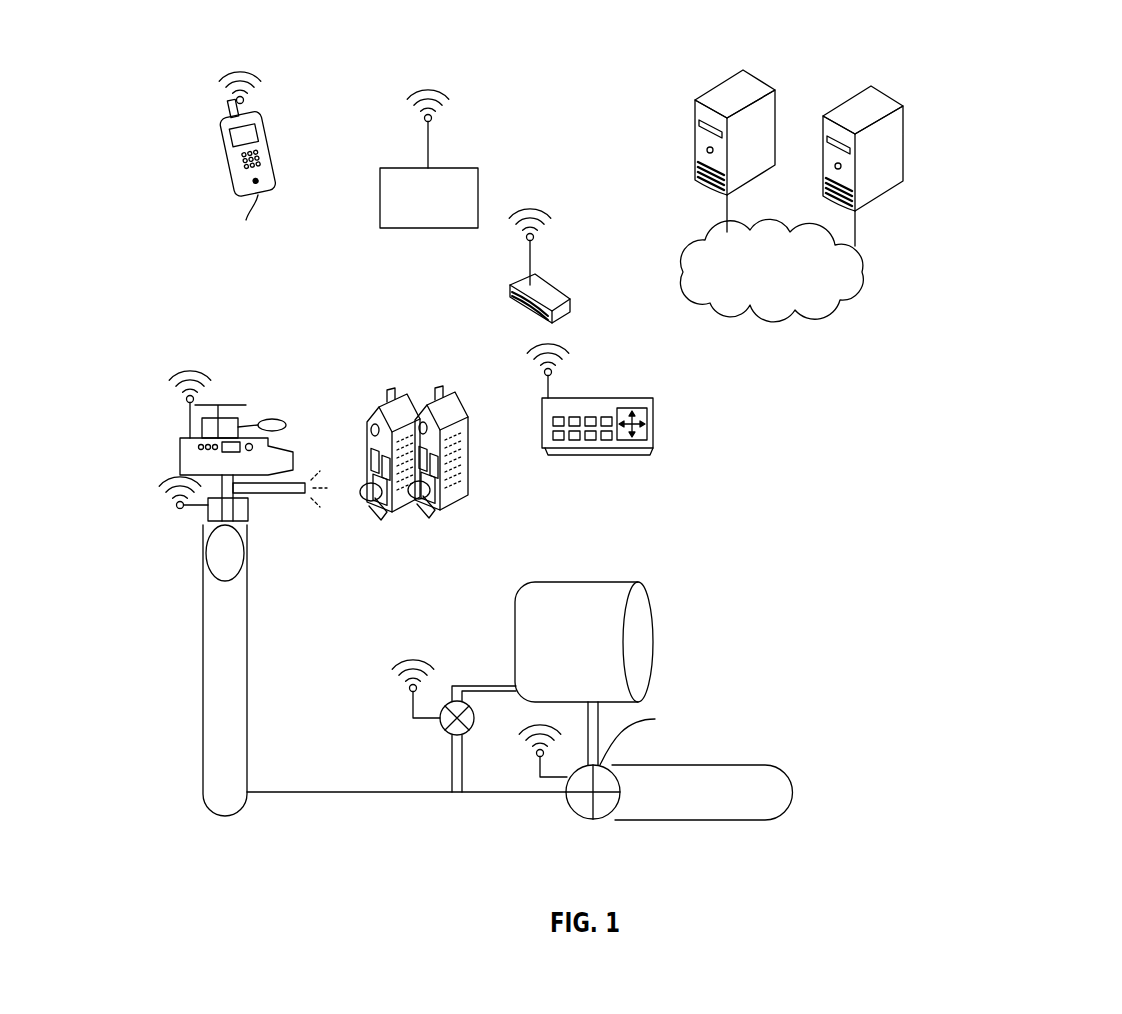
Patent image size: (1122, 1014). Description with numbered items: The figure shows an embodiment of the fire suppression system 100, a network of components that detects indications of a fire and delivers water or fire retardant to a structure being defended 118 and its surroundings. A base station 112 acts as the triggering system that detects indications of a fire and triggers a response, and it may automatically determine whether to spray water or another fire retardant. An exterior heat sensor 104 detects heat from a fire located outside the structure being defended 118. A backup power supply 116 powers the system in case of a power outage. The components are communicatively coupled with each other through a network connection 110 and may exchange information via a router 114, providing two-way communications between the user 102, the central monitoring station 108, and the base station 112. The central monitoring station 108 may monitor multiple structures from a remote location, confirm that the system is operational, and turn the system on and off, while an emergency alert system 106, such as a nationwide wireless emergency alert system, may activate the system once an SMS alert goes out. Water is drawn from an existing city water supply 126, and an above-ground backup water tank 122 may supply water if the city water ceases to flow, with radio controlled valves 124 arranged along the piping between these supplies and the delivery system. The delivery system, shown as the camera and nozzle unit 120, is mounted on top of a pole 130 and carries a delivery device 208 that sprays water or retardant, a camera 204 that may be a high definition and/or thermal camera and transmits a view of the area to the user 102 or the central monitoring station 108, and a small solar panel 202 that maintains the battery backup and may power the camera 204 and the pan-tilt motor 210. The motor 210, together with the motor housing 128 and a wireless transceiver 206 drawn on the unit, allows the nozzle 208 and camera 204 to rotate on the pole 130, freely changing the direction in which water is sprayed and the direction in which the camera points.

The fire suppression system 100 is at (985, 90).
The user 102 is at (240, 72).
The exterior heat sensor 104 is at (421, 82).
The emergency alert system 106 is at (742, 70).
The central monitoring station 108 is at (898, 184).
The network connection 110 is at (855, 292).
The base station 112 is at (655, 430).
The router 114 is at (551, 280).
The backup power supply 116 is at (541, 427).
The structure being defended 118 is at (469, 489).
The camera and nozzle unit 120 is at (150, 670).
The backup water tank 122 is at (655, 642).
The radio controlled valve 124 is at (460, 740).
The city water supply 126 is at (795, 792).
The motor 128 is at (207, 512).
The pole 130 is at (248, 702).
The solar panel 202 is at (377, 407).
The camera 204 is at (292, 456).
The wireless transceiver 206 is at (170, 480).
The delivery device 208 is at (287, 497).
The pan-tilt motor 210 is at (207, 510).